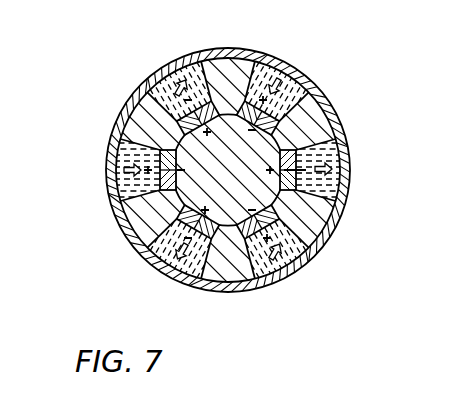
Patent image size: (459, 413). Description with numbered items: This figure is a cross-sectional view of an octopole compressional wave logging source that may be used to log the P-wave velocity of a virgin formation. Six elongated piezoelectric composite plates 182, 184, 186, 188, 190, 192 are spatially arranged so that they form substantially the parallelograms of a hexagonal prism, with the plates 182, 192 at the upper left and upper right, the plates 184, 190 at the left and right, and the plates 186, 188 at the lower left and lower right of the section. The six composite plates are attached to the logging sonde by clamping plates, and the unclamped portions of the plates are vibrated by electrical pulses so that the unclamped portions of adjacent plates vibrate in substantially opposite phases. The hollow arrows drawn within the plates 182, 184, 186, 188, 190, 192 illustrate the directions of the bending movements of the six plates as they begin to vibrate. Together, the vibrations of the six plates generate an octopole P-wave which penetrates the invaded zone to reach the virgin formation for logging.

The elongated piezoelectric composite plate 182 is at (197, 68).
The elongated piezoelectric composite plate 184 is at (109, 162).
The elongated piezoelectric composite plate 186 is at (148, 250).
The elongated piezoelectric composite plate 188 is at (303, 252).
The elongated piezoelectric composite plate 190 is at (300, 163).
The elongated piezoelectric composite plate 192 is at (286, 82).